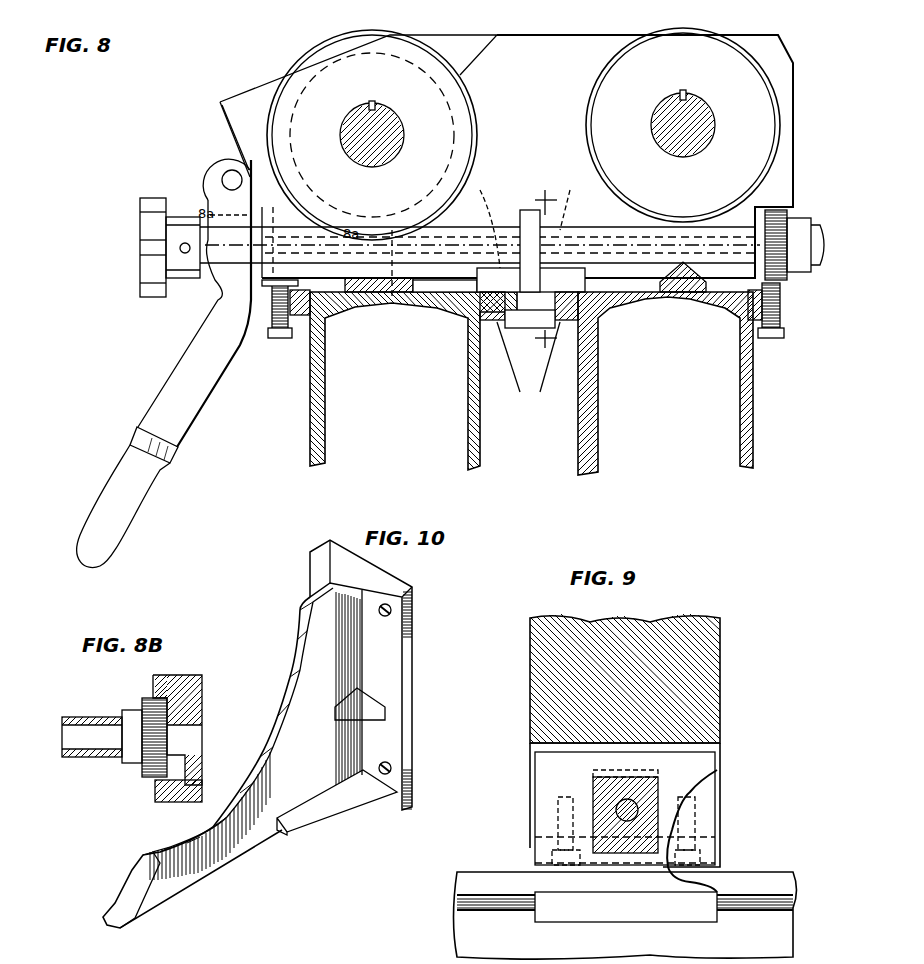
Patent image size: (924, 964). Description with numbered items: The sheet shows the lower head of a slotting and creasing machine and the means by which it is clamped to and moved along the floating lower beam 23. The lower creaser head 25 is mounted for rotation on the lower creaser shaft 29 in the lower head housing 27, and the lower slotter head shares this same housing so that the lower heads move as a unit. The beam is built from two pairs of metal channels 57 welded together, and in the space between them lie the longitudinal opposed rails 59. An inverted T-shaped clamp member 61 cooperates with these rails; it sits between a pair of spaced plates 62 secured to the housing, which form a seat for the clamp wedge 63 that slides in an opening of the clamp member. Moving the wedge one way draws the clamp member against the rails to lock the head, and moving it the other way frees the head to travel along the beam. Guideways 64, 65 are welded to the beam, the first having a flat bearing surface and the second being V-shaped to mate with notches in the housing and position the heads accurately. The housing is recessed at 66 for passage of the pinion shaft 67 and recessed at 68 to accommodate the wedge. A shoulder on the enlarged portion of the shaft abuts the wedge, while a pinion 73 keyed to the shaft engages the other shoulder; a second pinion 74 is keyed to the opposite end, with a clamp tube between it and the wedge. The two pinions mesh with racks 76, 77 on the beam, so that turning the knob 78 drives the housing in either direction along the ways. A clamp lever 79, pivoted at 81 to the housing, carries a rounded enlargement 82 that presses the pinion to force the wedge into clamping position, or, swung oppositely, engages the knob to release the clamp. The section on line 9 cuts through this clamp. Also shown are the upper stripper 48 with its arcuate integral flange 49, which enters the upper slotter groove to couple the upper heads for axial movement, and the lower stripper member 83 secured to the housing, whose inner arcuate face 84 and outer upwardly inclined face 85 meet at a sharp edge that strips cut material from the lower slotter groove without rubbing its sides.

In FIG. 8, the floating lower beam 23 is at (760, 432).
In FIG. 8, the lower creaser head 25 is at (590, 84).
In FIG. 8, the lower head housing 27 is at (782, 175).
In FIG. 8, the lower creaser shaft 29 is at (705, 112).
In FIG. 10, the stripper 48 is at (278, 734).
In FIG. 9, the stripper 48 is at (625, 678).
In FIG. 10, the integral flange 49 is at (227, 853).
In FIG. 8, the metal channels 57 is at (470, 427).
In FIG. 8, the rails 59 is at (528, 364).
In FIG. 9, the rails 59 is at (748, 883).
In FIG. 8, the clamp member 61 is at (528, 225).
In FIG. 9, the clamp member 61 is at (540, 780).
In FIG. 8, the spaced plates 62 is at (470, 285).
In FIG. 9, the spaced plates 62 is at (710, 845).
In FIG. 8, the clamp wedge 63 is at (573, 203).
In FIG. 9, the clamp wedge 63 is at (593, 785).
In FIG. 8, the guideway 64 is at (368, 285).
In FIG. 8, the guideway 65 is at (680, 295).
In FIG. 8, the recess 66 is at (392, 320).
In FIG. 8B, the recess 66 is at (200, 720).
In FIG. 8, the pinion shaft 67 is at (655, 245).
In FIG. 9, the pinion shaft 67 is at (638, 812).
In FIG. 8, the recess 68 is at (487, 222).
In FIG. 8, the pinion 73 is at (282, 330).
In FIG. 8B, the pinion 73 is at (150, 712).
In FIG. 8, the pinion 74 is at (790, 220).
In FIG. 8, the rack 76 is at (270, 300).
In FIG. 8, the rack 77 is at (782, 305).
In FIG. 8, the knob 78 is at (150, 285).
In FIG. 8, the clamp lever 79 is at (185, 415).
In FIG. 8, the pivot 81 is at (228, 180).
In FIG. 8, the rounded enlargement 82 is at (215, 270).
In FIG. 8, the stripper member 83 is at (232, 120).
In FIG. 8B, the stripper member 83 is at (155, 792).
In FIG. 8, the inner arcuate face 84 is at (340, 92).
In FIG. 8, the outer upwardly inclined face 85 is at (258, 95).
In FIG. 8, the section line 9 is at (546, 269).